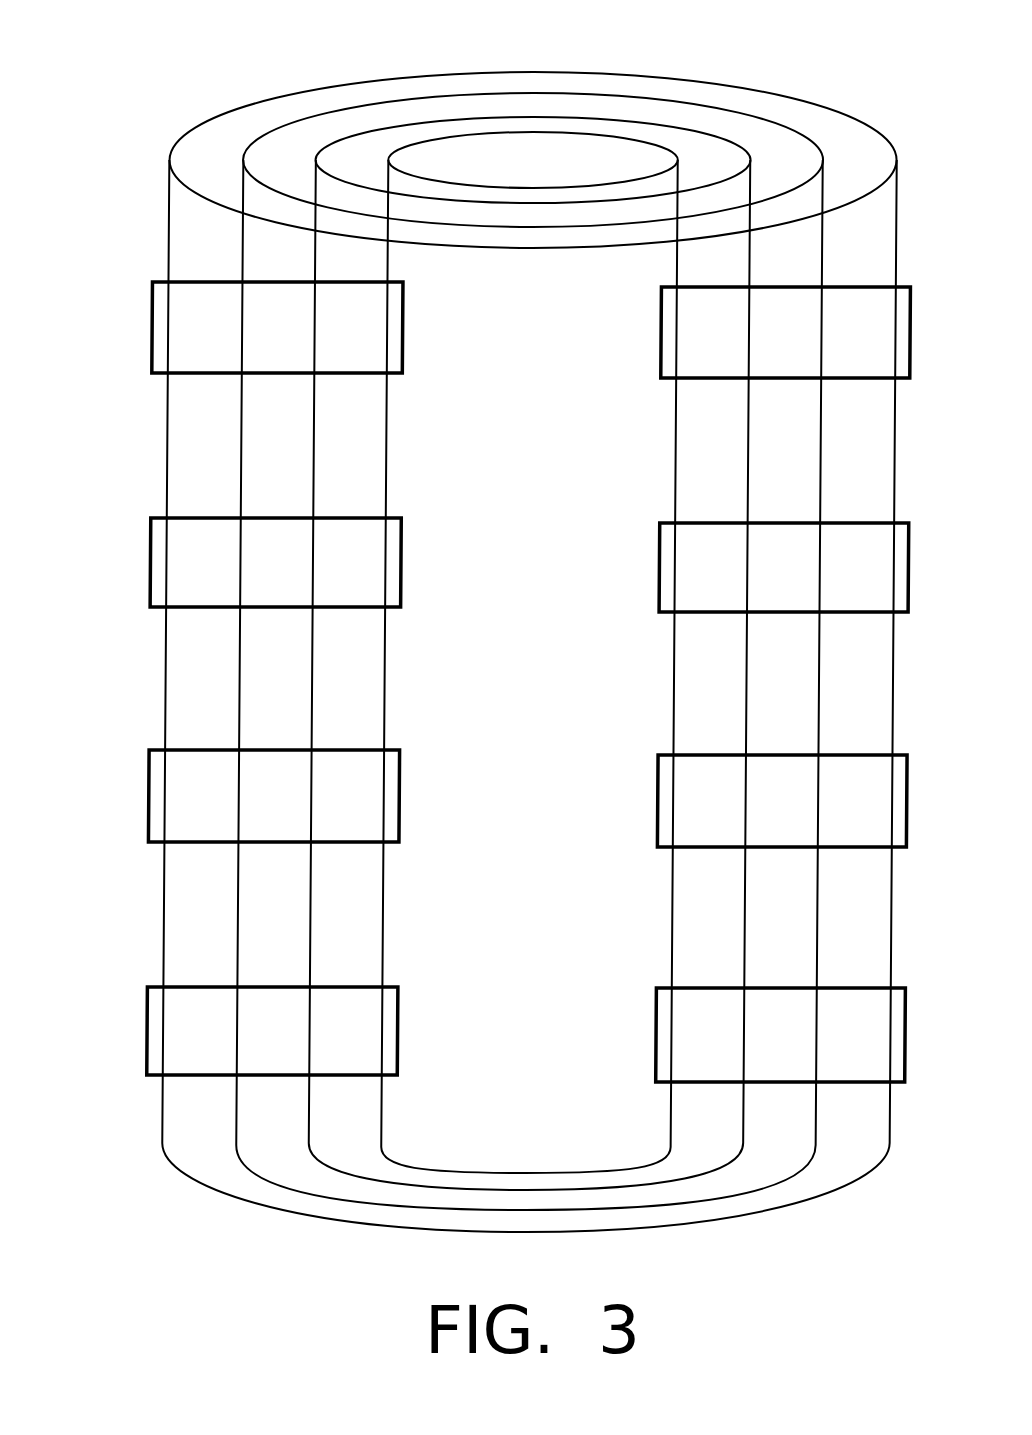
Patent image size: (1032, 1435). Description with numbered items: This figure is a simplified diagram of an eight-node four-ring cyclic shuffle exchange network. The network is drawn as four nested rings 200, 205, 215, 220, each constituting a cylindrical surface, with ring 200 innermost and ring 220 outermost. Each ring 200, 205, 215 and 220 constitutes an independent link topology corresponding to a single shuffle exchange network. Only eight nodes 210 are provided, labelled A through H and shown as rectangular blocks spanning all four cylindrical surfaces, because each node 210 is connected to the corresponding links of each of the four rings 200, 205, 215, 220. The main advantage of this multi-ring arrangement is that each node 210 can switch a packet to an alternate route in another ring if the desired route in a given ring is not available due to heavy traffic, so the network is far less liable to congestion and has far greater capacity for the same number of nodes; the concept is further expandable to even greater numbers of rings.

The ring 200 is at (600, 132).
The ring 205 is at (697, 132).
The ring 215 is at (783, 127).
The ring 220 is at (863, 126).
The node 210 is at (156, 373).